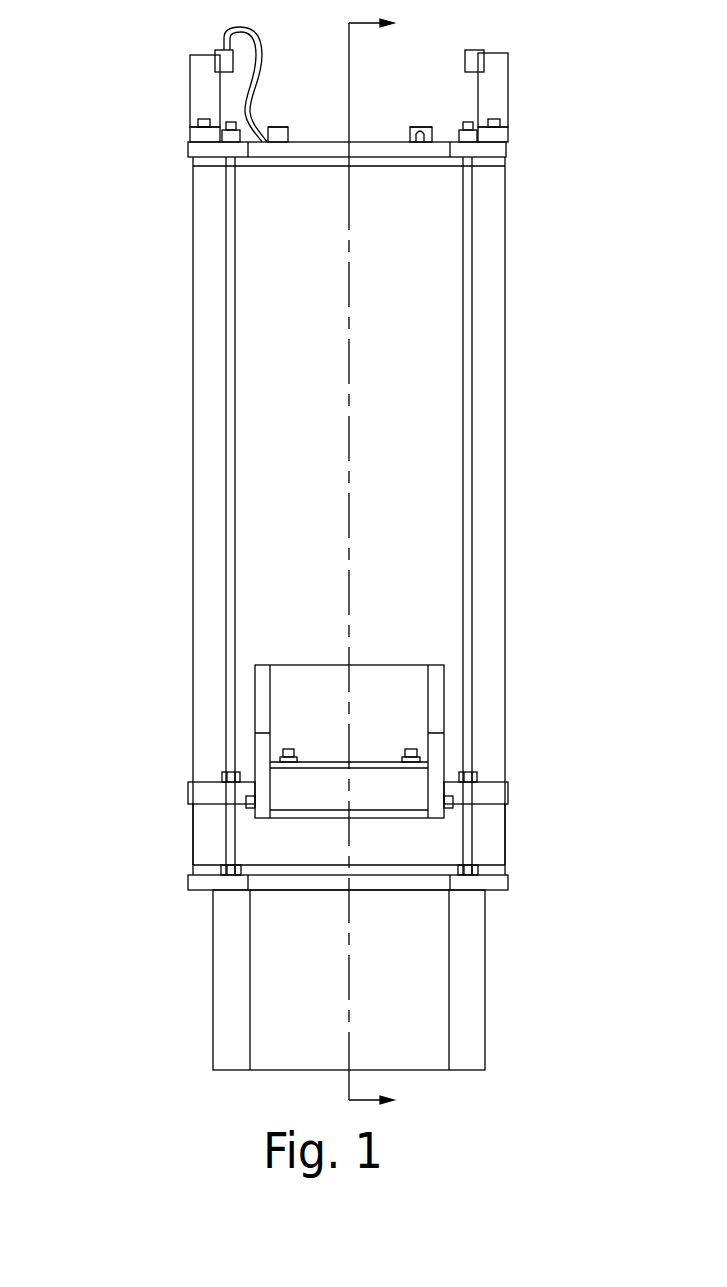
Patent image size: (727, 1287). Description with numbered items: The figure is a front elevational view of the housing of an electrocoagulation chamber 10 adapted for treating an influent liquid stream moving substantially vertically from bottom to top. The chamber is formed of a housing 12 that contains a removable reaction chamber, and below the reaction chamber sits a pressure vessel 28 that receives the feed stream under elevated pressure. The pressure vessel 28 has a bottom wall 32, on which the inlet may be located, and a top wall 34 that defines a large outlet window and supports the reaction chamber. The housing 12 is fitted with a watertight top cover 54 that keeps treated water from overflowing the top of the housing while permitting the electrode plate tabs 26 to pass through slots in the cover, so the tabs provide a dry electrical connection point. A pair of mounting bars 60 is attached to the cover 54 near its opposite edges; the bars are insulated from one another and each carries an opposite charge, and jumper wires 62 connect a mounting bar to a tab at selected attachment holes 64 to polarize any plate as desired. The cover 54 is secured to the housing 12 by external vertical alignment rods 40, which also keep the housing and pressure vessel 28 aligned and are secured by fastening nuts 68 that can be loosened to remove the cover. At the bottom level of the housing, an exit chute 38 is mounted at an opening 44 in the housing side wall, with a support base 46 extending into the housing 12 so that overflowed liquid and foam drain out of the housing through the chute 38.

The electrocoagulation chamber 10 is at (118, 123).
The housing 12 is at (498, 327).
The tabs 26 is at (268, 128).
The pressure vessel 28 is at (483, 832).
The bottom wall 32 is at (485, 868).
The top wall 34 is at (485, 790).
The exit chute 38 is at (309, 782).
The vertical alignment rods 40 is at (232, 368).
The opening 44 is at (339, 663).
The support base 46 is at (355, 762).
The top cover 54 is at (506, 148).
The mounting bars 60 is at (218, 55).
The jumper wires 62 is at (265, 62).
The attachment holes 64 is at (288, 141).
The fastening nuts 68 is at (217, 137).